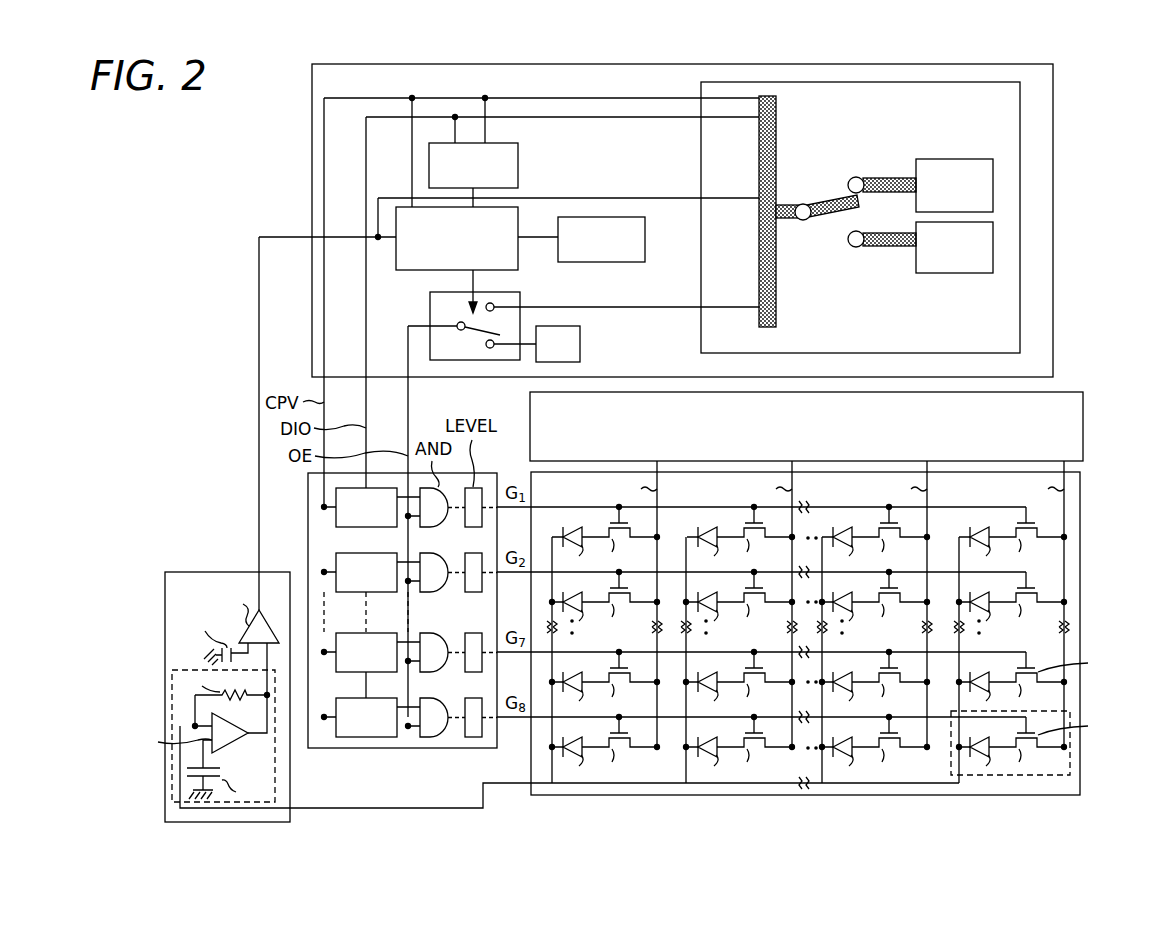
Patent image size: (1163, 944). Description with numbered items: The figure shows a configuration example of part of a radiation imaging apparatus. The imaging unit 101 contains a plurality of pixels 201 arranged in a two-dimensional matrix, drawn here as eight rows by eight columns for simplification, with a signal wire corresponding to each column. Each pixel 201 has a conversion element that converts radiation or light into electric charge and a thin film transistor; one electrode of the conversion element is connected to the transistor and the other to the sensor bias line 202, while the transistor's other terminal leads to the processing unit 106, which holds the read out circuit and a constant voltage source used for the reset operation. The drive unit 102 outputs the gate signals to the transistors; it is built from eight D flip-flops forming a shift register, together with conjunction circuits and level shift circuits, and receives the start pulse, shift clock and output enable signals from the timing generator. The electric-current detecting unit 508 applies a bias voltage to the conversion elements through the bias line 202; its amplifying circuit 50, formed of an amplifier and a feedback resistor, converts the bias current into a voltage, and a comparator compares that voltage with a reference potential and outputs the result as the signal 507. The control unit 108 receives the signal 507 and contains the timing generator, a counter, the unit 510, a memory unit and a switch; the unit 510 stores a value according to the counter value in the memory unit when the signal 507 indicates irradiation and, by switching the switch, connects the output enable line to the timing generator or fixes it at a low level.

The amplifying circuit 50 is at (172, 701).
The imaging unit 101 is at (835, 643).
The drive unit 102 is at (397, 749).
The processing unit 106 is at (1083, 423).
The control unit 108 is at (686, 220).
The pixel 201 is at (1018, 776).
The sensor bias line 202 is at (510, 796).
The signal 507 is at (259, 382).
The electric-current detecting unit 508 is at (197, 697).
The unit 510 is at (423, 271).